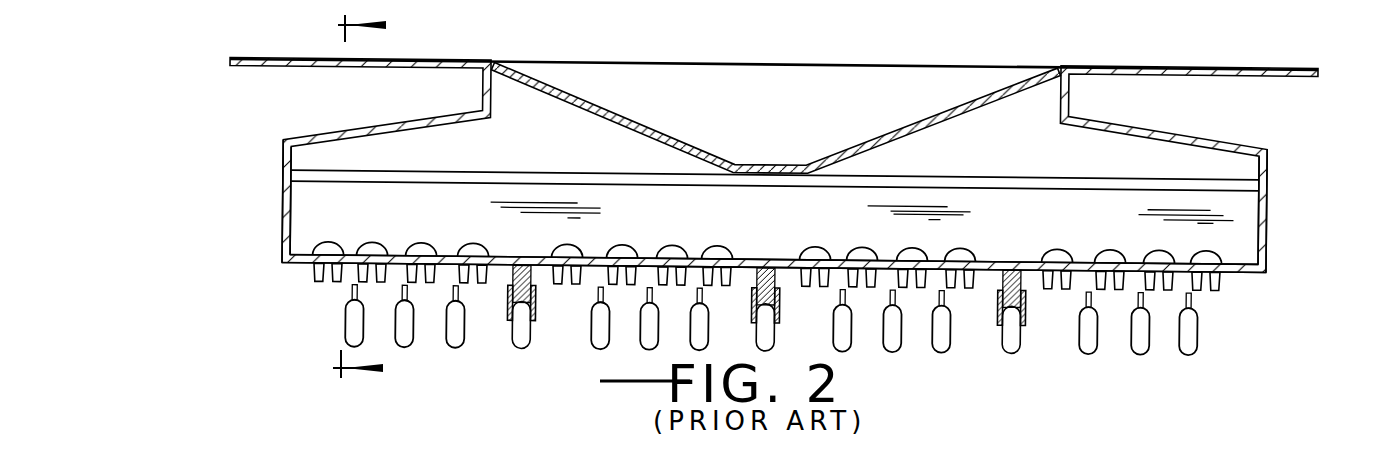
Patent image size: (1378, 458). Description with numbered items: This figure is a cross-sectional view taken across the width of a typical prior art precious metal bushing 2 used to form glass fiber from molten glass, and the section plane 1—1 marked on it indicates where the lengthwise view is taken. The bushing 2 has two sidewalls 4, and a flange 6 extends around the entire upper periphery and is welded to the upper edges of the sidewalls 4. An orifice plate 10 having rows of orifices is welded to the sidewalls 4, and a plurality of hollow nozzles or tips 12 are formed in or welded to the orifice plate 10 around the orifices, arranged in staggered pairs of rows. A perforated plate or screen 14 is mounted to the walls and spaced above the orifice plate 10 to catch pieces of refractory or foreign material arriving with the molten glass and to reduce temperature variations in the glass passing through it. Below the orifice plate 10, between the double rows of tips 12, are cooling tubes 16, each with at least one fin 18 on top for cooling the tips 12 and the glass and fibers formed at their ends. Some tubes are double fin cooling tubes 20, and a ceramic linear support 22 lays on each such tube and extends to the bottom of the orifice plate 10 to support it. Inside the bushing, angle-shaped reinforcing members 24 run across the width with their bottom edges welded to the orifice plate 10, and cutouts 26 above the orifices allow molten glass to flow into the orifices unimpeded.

The section plane 1— 1 is at (373, 199).
The bushing 2 is at (1232, 142).
The sidewalls 4 is at (282, 210).
The flange 6 is at (1176, 68).
The orifice plate 10 is at (306, 266).
The tips 12 is at (1227, 282).
The perforated plate or screen 14 is at (620, 118).
The cooling tubes 16 is at (1150, 355).
The fin 18 is at (1193, 299).
The double fin cooling tubes 20 is at (777, 341).
The ceramic linear support 22 is at (517, 288).
The reinforcing members 24 is at (1232, 234).
The cutouts 26 is at (423, 240).